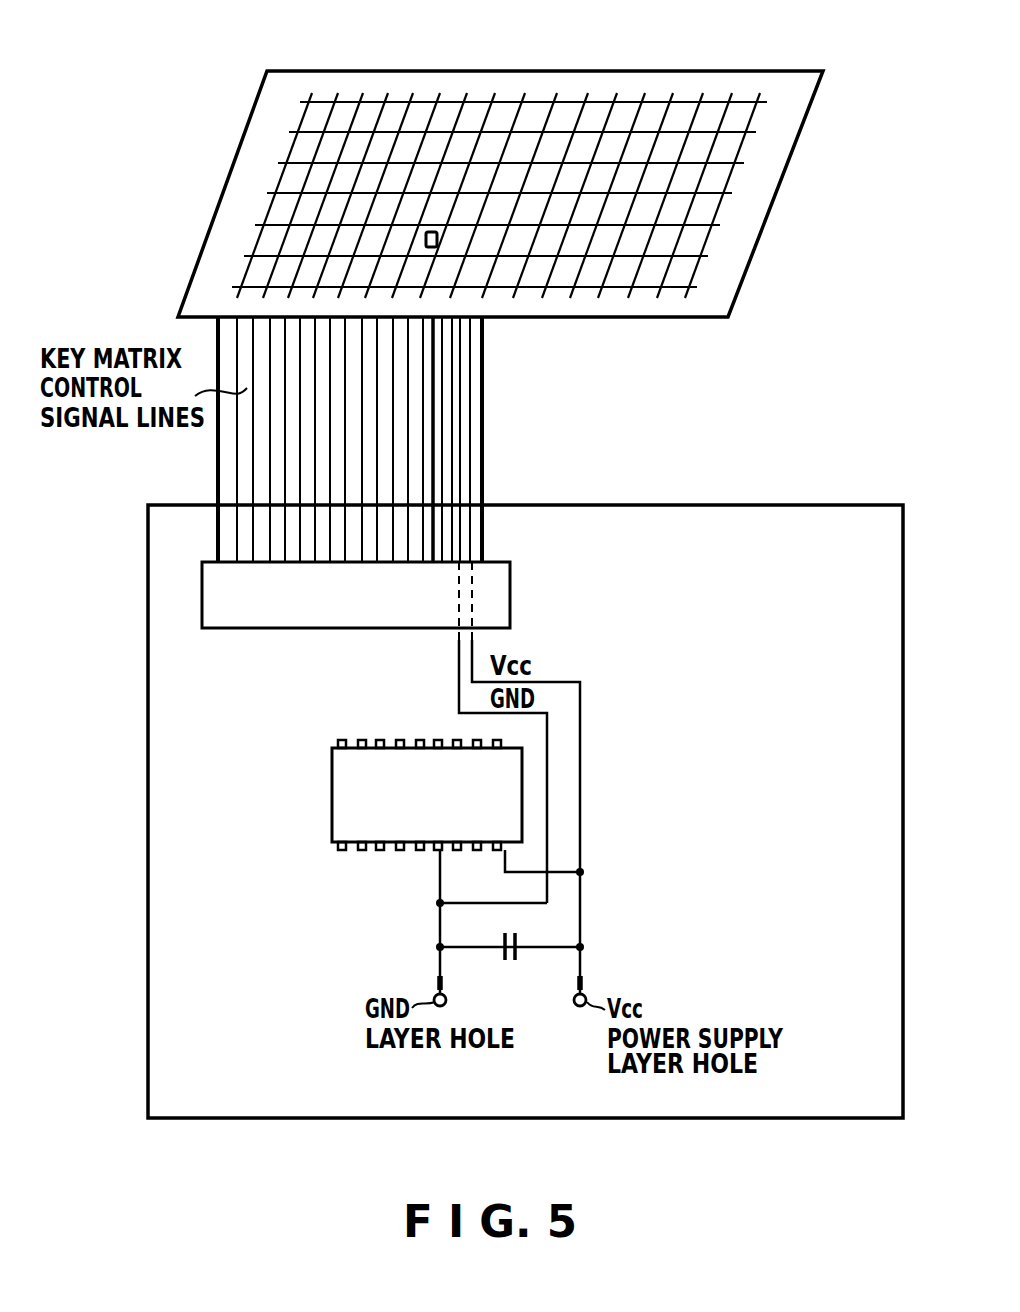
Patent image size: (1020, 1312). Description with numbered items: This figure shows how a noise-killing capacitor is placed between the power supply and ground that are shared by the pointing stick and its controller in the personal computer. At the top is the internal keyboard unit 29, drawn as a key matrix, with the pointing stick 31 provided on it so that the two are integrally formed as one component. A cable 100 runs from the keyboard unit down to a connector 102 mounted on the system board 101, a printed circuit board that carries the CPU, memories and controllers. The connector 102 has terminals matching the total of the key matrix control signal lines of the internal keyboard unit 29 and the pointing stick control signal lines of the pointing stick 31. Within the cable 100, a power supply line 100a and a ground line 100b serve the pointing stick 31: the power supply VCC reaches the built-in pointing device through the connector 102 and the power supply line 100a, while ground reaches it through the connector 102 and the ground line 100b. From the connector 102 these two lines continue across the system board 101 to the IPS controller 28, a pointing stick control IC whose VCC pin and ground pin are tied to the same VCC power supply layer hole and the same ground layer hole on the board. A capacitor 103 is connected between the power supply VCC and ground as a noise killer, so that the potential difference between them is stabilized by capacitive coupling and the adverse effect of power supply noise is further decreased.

The internal keyboard unit 29 is at (424, 70).
The pointing stick 31 is at (436, 230).
The cable 100 is at (484, 455).
The power supply line 100a is at (471, 388).
The ground line 100b is at (458, 430).
The system board 101 is at (845, 505).
The connector 102 is at (511, 600).
The IPS controller 28 is at (332, 792).
The capacitor 103 is at (509, 963).